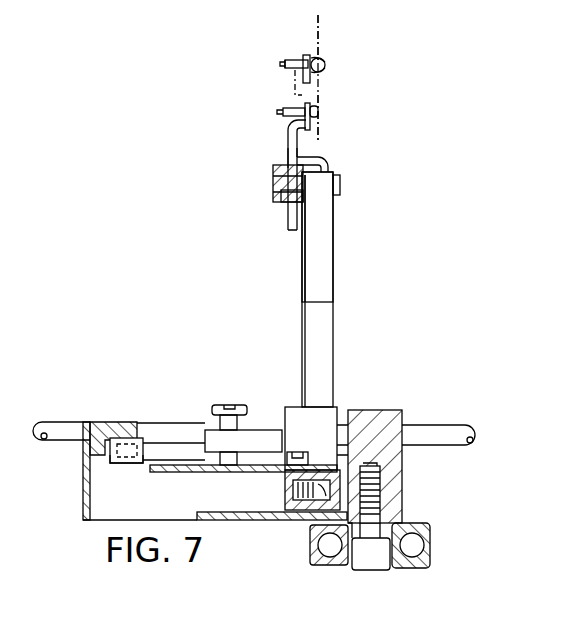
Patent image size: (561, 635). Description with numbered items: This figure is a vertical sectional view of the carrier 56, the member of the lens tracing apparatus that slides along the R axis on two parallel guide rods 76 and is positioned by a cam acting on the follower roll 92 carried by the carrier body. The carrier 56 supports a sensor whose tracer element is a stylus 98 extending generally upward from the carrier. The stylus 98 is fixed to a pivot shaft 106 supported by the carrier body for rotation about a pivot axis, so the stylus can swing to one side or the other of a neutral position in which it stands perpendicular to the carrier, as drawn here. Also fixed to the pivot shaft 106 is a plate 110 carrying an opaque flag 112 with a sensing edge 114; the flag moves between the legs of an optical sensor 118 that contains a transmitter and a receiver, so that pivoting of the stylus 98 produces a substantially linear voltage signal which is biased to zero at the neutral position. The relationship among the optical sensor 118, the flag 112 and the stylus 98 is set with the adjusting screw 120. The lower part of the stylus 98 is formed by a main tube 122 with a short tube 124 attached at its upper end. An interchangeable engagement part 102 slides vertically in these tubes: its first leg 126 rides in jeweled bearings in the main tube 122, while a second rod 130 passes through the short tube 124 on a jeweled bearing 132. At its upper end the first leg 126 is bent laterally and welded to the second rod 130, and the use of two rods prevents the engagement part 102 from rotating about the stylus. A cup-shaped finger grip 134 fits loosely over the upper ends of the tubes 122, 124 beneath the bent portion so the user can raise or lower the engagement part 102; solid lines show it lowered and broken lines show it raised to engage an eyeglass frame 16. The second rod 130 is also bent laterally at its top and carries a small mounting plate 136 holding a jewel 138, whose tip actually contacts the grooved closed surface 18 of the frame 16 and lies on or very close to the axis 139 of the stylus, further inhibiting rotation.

The axis of the stylus 139 is at (317, 30).
The jewel 138 is at (310, 55).
The eyeglass frame 16 is at (322, 61).
The closed surface 18 is at (326, 79).
The engagement part 102 is at (289, 138).
The mounting plate 136 is at (324, 124).
The second rod 130 is at (292, 160).
The first leg 126 is at (329, 161).
The jeweled bearing 132 is at (275, 182).
The short tube 124 is at (283, 198).
The finger grip 134 is at (340, 183).
The main tube 122 is at (334, 242).
The stylus 98 is at (334, 300).
The guide rods 76 is at (58, 420).
The optical sensor 118 is at (125, 424).
The sensing edge 114 is at (140, 440).
The opaque flag 112 is at (126, 464).
The plate 110 is at (178, 472).
The adjusting screw 120 is at (250, 388).
The pivot shaft 106 is at (315, 502).
The carrier 56 is at (392, 410).
The follower roll 92 is at (428, 545).